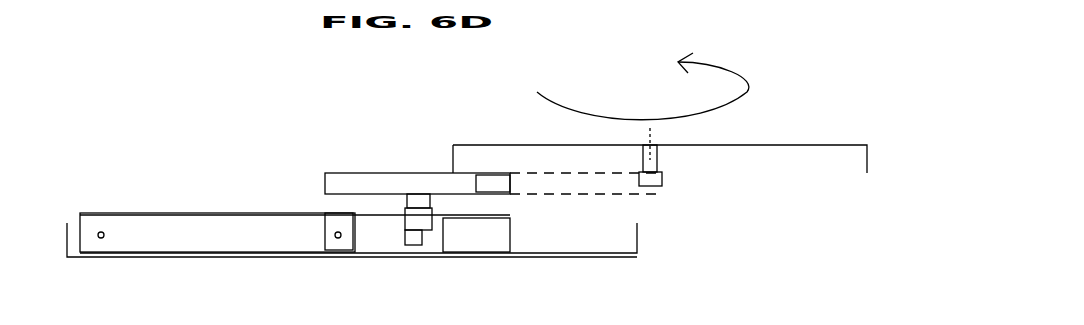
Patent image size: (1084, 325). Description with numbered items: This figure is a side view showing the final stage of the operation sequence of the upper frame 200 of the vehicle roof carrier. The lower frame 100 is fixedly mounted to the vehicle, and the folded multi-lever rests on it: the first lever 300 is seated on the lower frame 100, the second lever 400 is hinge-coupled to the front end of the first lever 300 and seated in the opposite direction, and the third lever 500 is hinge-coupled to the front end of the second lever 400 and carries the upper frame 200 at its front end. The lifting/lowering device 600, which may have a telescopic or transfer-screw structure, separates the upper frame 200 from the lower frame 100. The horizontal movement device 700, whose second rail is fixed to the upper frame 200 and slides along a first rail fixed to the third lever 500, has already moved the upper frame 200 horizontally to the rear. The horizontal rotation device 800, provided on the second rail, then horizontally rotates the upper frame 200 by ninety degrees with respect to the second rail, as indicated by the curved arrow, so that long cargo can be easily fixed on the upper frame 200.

The lower frame 100 is at (68, 258).
The upper frame 200 is at (833, 147).
The first lever 300 is at (358, 255).
The second lever 400 is at (157, 228).
The third lever 500 is at (463, 235).
The lifting/lowering device 600 is at (422, 235).
The horizontal movement device 700 is at (447, 178).
The horizontal rotation device 800 is at (659, 173).